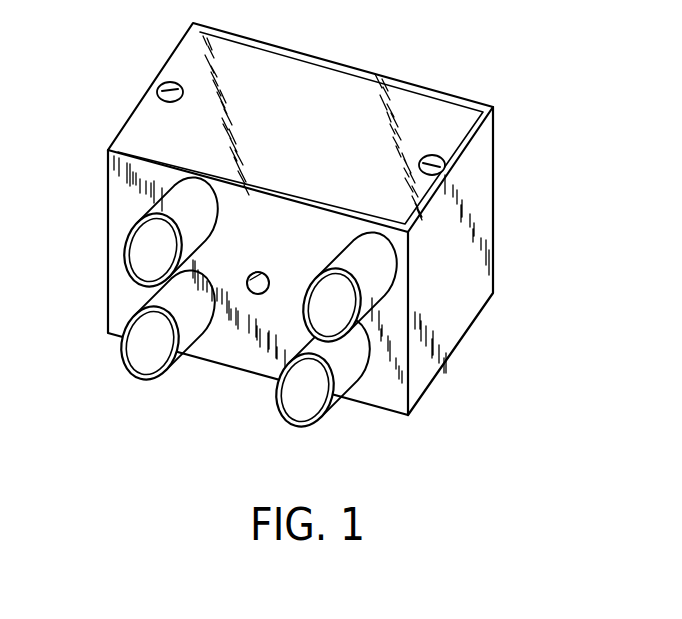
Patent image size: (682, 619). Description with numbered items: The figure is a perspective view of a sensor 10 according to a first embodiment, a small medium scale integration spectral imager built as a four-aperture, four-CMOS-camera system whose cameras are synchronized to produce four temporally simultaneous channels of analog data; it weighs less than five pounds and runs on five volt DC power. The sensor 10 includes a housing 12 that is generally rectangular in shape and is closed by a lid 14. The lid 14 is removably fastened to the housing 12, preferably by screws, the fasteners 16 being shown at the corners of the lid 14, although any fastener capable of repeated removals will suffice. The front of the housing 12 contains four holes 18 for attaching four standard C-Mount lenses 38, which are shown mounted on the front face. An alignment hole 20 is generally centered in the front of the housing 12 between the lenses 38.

The sensor 10 is at (331, 246).
The housing 12 is at (473, 297).
The lid 14 is at (333, 85).
The fastener screw 16 is at (163, 84).
The holes 18 is at (168, 182).
The alignment hole 20 is at (253, 294).
The C-Mount lenses 38 is at (156, 199).